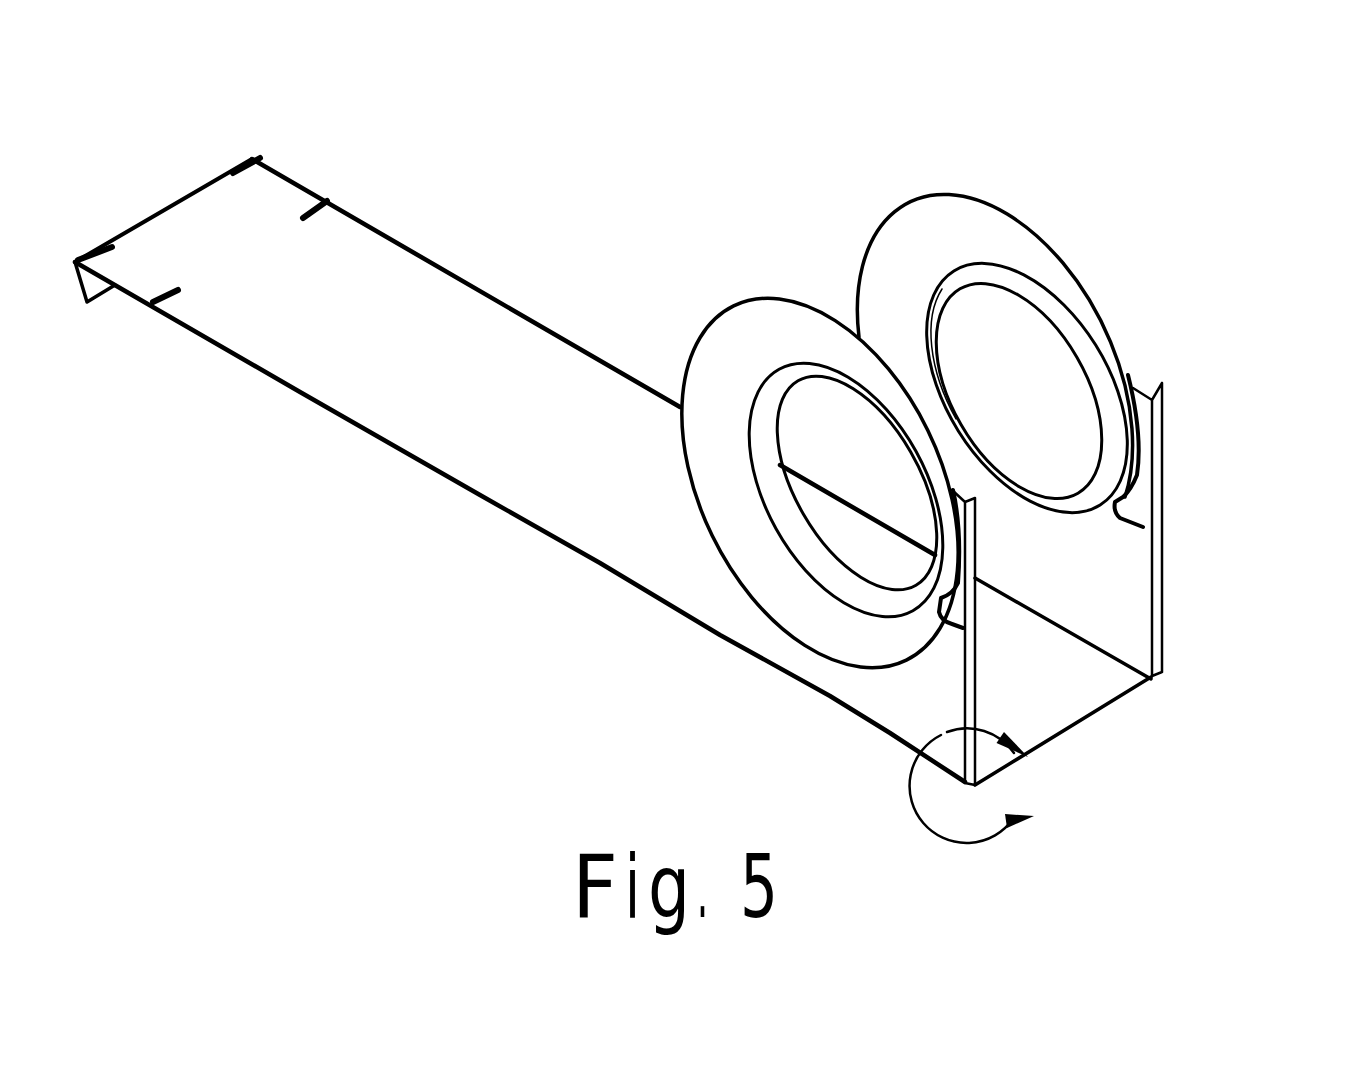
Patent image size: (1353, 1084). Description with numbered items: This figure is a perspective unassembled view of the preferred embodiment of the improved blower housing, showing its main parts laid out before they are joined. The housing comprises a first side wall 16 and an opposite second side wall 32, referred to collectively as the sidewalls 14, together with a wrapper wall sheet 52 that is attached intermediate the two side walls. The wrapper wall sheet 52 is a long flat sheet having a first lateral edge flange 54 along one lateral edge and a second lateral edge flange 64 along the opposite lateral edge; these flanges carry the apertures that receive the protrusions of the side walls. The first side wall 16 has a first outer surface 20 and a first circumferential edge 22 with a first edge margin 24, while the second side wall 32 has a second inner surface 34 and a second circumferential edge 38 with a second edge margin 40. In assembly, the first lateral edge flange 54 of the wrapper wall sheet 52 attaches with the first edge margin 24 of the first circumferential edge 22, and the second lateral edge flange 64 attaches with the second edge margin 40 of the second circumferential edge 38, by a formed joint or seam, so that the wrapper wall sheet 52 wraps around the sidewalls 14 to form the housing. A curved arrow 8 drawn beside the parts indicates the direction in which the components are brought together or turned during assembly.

The direction of rotation 8 is at (980, 785).
The sidewalls 14 is at (707, 465).
The first side wall 16 is at (618, 482).
The first outer surface 20 is at (618, 482).
The first circumferential edge 22 is at (820, 425).
The first edge margin 24 is at (735, 301).
The second side wall 32 is at (1112, 386).
The second inner surface 34 is at (1013, 252).
The second circumferential edge 38 is at (1000, 307).
The second edge margin 40 is at (972, 199).
The wrapper wall sheet 52 is at (340, 387).
The first lateral edge flange 54 is at (490, 503).
The second lateral edge flange 64 is at (455, 268).